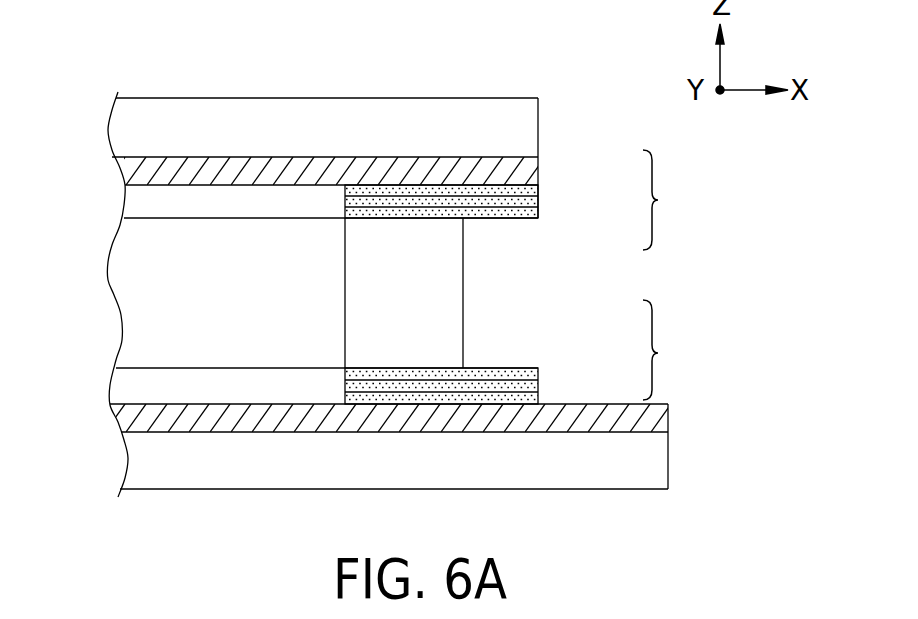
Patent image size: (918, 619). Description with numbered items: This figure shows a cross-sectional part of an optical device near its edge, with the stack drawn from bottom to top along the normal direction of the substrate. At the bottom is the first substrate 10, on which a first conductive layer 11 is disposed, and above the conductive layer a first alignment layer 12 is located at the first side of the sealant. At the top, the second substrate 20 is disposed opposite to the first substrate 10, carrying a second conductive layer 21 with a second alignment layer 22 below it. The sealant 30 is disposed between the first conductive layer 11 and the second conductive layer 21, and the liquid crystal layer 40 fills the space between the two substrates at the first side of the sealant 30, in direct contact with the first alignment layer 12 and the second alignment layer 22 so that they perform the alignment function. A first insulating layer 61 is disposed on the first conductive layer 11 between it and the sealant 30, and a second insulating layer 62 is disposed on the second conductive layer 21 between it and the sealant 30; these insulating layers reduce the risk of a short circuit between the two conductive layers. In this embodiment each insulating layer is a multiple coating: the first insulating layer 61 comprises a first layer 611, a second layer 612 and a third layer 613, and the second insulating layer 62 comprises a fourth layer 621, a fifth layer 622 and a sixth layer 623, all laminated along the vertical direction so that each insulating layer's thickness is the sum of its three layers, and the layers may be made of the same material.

The first substrate 10 is at (132, 459).
The first conductive layer 11 is at (125, 420).
The first alignment layer 12 is at (120, 384).
The second substrate 20 is at (121, 128).
The second conductive layer 21 is at (128, 168).
The second alignment layer 22 is at (128, 202).
The sealant 30 is at (450, 290).
The liquid crystal layer 40 is at (130, 296).
The first insulating layer 61 is at (516, 352).
The first layer 611 is at (538, 398).
The second layer 612 is at (538, 386).
The third layer 613 is at (538, 374).
The second insulating layer 62 is at (516, 200).
The fourth layer 621 is at (538, 190).
The fifth layer 622 is at (538, 200).
The sixth layer 623 is at (538, 212).